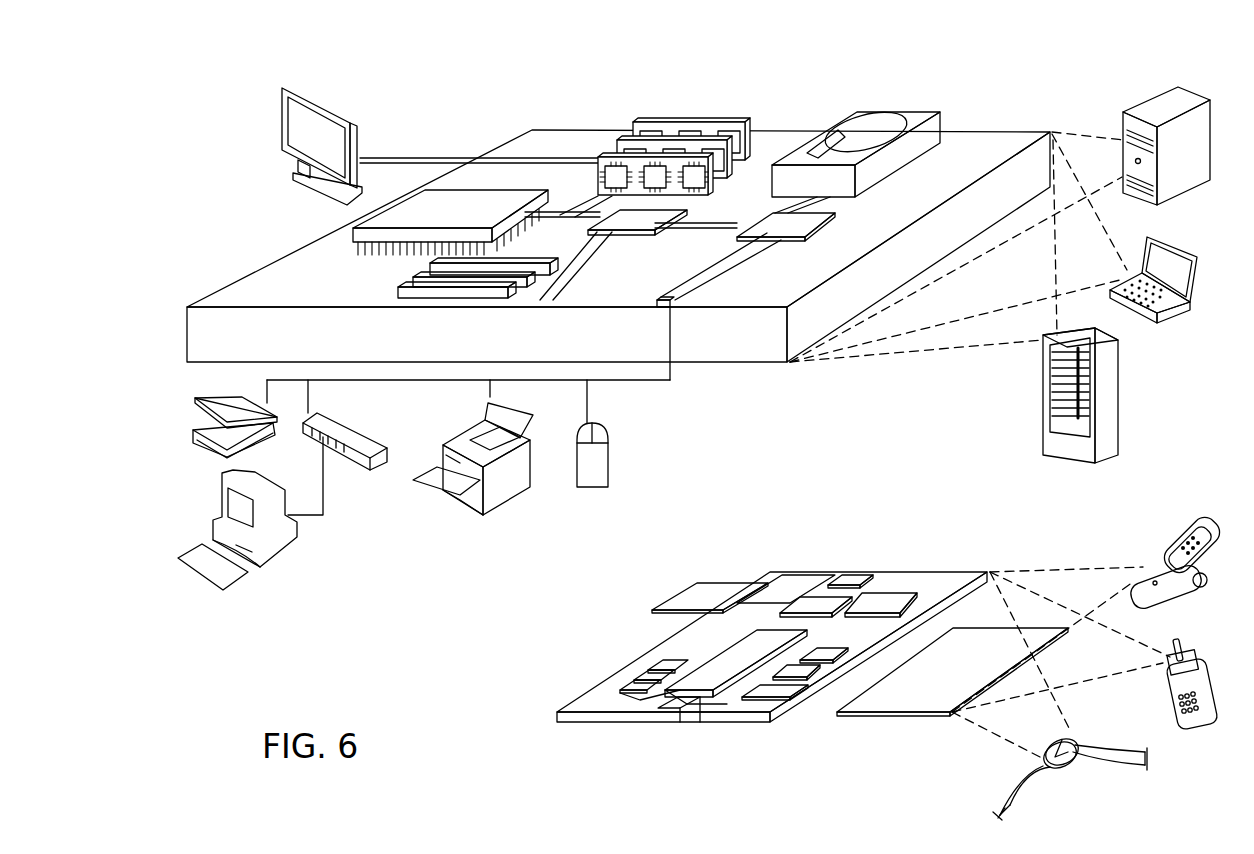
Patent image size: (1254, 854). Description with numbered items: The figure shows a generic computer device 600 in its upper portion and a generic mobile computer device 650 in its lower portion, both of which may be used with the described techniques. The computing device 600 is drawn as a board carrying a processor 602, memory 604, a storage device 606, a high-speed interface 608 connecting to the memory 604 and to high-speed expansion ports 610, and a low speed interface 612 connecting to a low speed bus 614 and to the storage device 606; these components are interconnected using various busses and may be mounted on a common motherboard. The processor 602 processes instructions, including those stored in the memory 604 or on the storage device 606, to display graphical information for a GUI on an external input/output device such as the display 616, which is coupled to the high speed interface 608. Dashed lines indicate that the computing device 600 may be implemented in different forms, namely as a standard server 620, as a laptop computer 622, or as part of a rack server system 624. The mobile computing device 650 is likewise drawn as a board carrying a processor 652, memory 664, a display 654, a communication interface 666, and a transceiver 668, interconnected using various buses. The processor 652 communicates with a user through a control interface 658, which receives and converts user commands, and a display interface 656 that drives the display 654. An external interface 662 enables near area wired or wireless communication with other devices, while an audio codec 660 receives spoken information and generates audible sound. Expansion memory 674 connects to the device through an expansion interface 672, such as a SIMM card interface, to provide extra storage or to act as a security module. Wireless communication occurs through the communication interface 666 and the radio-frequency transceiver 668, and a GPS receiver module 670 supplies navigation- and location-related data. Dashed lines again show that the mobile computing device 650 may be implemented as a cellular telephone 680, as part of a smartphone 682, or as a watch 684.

The computing device 600 is at (468, 112).
The processor 602 is at (355, 240).
The memory 604 is at (660, 120).
The storage device 606 is at (850, 110).
The high-speed interface 608 is at (620, 223).
The high-speed expansion ports 610 is at (400, 295).
The low speed interface 612 is at (772, 228).
The low speed bus 614 is at (667, 307).
The display 616 is at (285, 98).
The standard server 620 is at (1123, 112).
The laptop computer 622 is at (1168, 240).
The rack server system 624 is at (1043, 412).
The mobile computer device 650 is at (797, 533).
The processor 652 is at (715, 700).
The display 654 is at (940, 712).
The display interface 656 is at (770, 692).
The control interface 658 is at (800, 675).
The audio codec 660 is at (832, 657).
The external interface 662 is at (680, 718).
The memory 664 is at (640, 675).
The communication interface 666 is at (812, 603).
The transceiver 668 is at (885, 600).
The GPS receiver module 670 is at (855, 580).
The expansion interface 672 is at (757, 583).
The expansion memory 674 is at (700, 583).
The cellular telephone 680 is at (1175, 542).
The smartphone 682 is at (1178, 640).
The watch 684 is at (1068, 775).